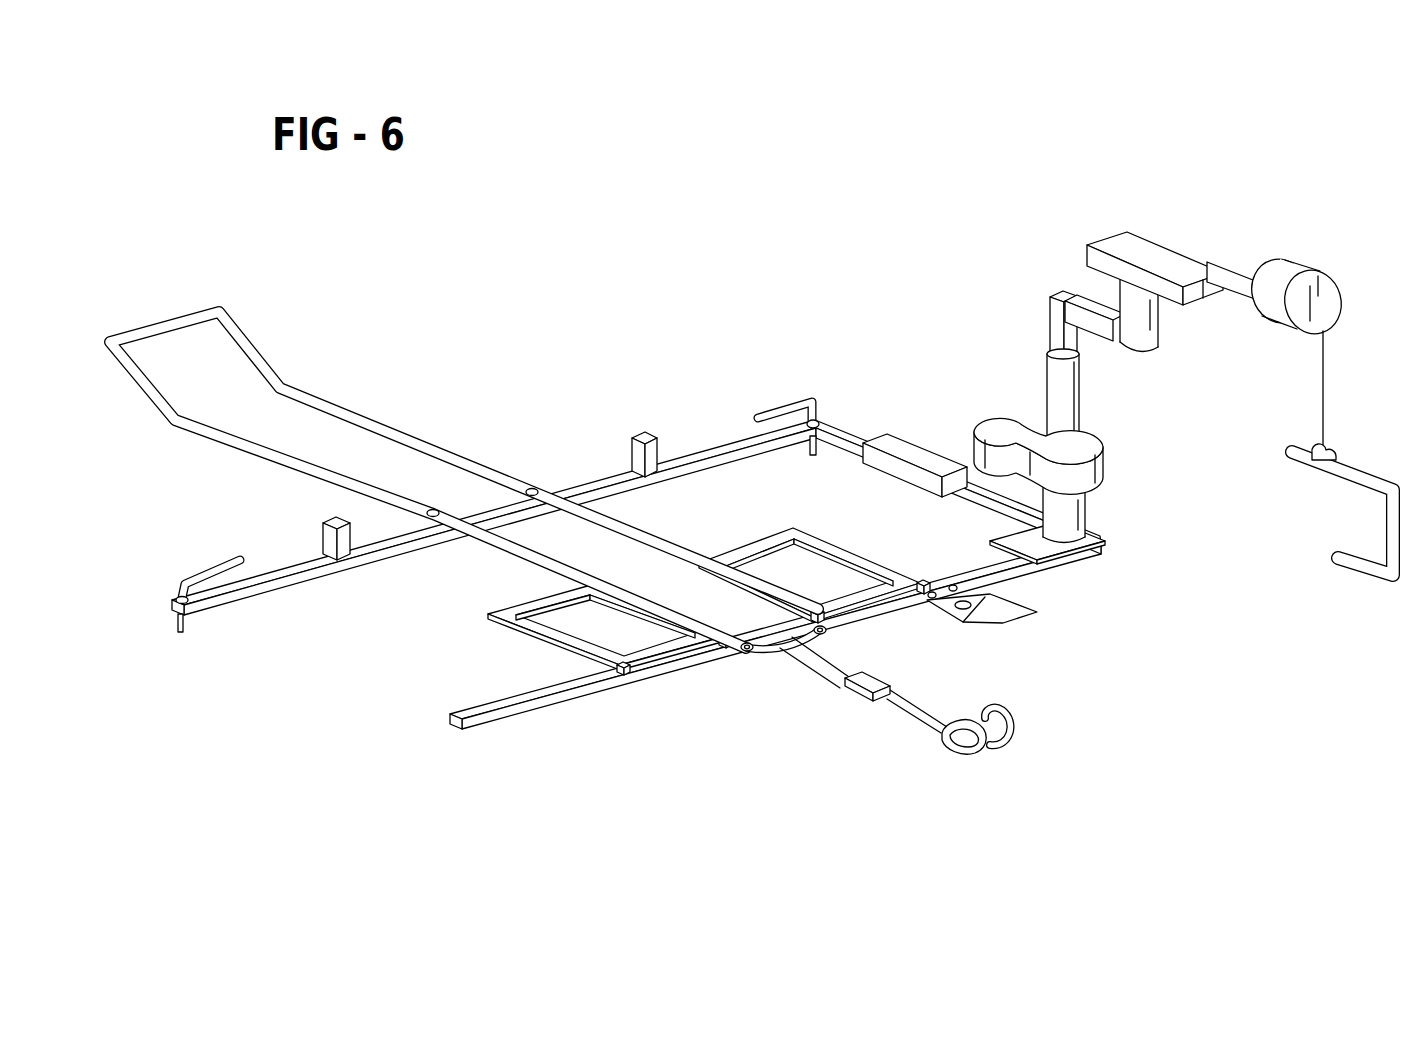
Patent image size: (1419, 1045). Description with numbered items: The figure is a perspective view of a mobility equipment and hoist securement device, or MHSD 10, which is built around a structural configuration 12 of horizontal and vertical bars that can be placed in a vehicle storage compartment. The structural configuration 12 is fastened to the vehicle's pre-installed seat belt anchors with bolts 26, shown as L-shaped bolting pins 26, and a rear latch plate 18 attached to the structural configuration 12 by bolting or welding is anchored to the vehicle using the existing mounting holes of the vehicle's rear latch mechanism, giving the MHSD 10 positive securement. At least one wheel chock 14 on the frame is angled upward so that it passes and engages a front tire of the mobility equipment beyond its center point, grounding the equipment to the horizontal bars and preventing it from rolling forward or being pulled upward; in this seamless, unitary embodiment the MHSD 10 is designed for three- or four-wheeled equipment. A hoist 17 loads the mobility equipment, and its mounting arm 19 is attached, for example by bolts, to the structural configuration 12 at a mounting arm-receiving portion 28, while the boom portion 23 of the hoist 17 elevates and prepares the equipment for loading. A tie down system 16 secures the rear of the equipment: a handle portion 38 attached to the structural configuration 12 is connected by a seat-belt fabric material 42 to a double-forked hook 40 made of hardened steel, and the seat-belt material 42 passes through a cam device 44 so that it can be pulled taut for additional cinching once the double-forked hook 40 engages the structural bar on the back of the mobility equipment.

The mobility equipment and hoist securement device (MHSD) 10 is at (613, 296).
The structural configuration 12 is at (456, 458).
The wheel chock 14 is at (230, 326).
The tie down system 16 is at (870, 720).
The hoist 17 is at (1183, 332).
The rear latch plate 18 is at (980, 603).
The mounting arm 19 is at (1082, 512).
The boom portion 23 is at (1185, 262).
The L-shaped bolting pin 26 is at (770, 411).
The mounting arm-receiving portion 28 is at (1108, 546).
The handle portion 38 is at (757, 653).
The double-forked hook 40 is at (967, 756).
The seat-belt fabric material 42 is at (893, 706).
The cam device 44 is at (885, 680).